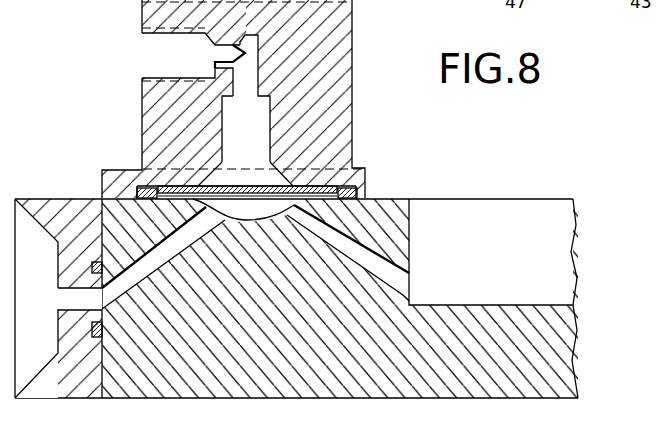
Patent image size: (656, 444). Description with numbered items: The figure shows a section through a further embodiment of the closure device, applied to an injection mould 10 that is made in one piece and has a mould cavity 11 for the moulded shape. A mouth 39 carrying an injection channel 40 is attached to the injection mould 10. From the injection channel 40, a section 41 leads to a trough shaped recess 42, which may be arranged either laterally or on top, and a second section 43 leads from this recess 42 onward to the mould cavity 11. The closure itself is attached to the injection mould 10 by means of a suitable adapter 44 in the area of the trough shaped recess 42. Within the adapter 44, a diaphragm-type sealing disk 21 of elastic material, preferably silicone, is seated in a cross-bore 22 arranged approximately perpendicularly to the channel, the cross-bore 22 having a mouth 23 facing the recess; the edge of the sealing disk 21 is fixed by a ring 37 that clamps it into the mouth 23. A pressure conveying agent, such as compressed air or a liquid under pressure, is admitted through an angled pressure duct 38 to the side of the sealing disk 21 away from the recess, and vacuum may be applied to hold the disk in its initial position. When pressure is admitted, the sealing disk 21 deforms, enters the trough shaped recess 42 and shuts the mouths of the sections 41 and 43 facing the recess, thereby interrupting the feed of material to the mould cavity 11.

The injection mould 10 is at (482, 158).
The mould cavity 11 is at (454, 220).
The sealing disk 21 is at (248, 190).
The cross-bore 22 is at (260, 115).
The mouth 23 is at (284, 184).
The ring 37 is at (173, 186).
The pressure duct 38 is at (246, 45).
The mouth 39 is at (86, 383).
The injection channel 40 is at (75, 300).
The section 41 is at (157, 257).
The trough shaped recess 42 is at (248, 214).
The second section 43 is at (337, 249).
The adapter 44 is at (362, 42).